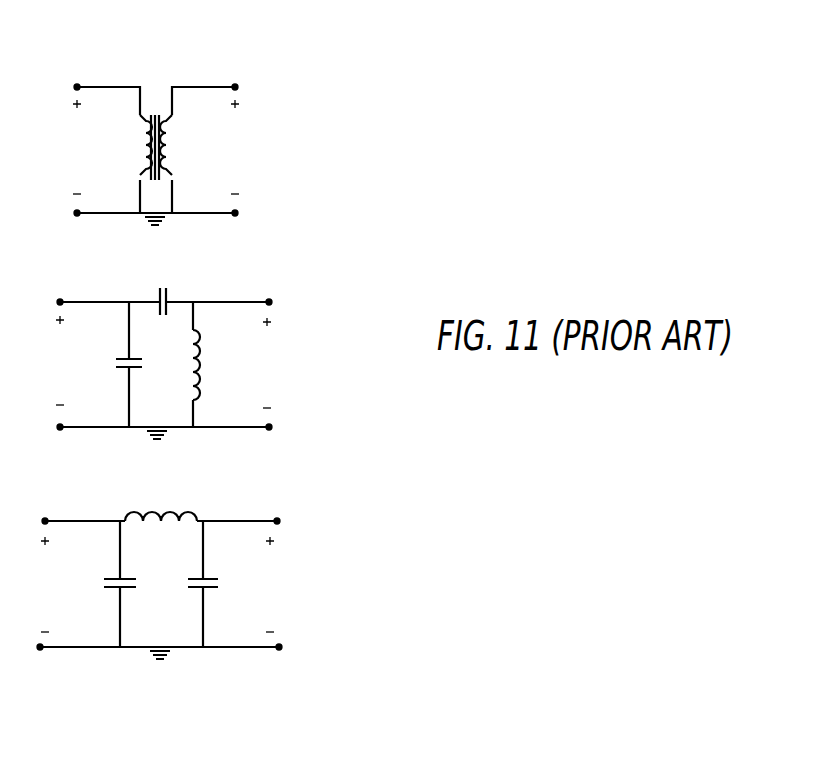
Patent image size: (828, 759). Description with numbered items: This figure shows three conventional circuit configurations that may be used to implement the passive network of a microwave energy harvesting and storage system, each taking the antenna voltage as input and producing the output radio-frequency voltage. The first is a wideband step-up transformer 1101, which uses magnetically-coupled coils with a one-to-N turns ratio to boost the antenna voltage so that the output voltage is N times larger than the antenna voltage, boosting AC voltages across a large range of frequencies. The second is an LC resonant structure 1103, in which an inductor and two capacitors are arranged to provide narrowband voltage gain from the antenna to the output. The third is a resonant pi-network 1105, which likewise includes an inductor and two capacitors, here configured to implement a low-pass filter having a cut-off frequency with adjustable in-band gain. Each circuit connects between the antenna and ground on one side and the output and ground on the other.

The wideband step-up transformer 1101 is at (345, 151).
The LC resonant structure 1103 is at (345, 373).
The resonant pi-network 1105 is at (353, 588).